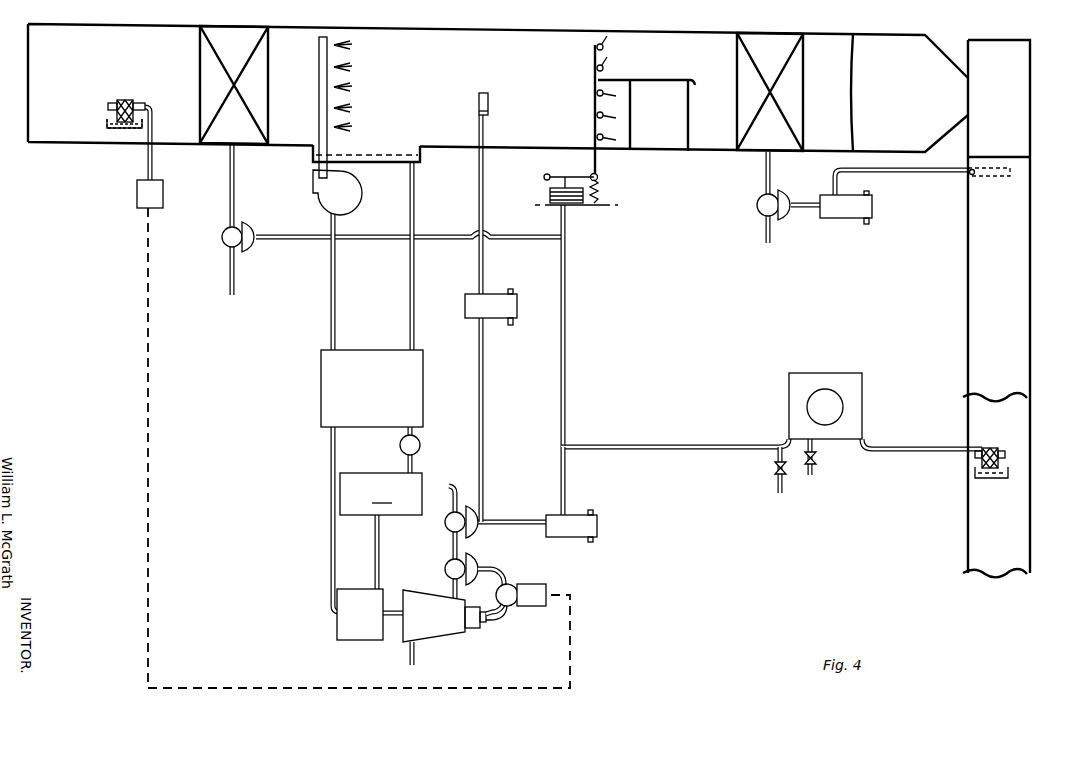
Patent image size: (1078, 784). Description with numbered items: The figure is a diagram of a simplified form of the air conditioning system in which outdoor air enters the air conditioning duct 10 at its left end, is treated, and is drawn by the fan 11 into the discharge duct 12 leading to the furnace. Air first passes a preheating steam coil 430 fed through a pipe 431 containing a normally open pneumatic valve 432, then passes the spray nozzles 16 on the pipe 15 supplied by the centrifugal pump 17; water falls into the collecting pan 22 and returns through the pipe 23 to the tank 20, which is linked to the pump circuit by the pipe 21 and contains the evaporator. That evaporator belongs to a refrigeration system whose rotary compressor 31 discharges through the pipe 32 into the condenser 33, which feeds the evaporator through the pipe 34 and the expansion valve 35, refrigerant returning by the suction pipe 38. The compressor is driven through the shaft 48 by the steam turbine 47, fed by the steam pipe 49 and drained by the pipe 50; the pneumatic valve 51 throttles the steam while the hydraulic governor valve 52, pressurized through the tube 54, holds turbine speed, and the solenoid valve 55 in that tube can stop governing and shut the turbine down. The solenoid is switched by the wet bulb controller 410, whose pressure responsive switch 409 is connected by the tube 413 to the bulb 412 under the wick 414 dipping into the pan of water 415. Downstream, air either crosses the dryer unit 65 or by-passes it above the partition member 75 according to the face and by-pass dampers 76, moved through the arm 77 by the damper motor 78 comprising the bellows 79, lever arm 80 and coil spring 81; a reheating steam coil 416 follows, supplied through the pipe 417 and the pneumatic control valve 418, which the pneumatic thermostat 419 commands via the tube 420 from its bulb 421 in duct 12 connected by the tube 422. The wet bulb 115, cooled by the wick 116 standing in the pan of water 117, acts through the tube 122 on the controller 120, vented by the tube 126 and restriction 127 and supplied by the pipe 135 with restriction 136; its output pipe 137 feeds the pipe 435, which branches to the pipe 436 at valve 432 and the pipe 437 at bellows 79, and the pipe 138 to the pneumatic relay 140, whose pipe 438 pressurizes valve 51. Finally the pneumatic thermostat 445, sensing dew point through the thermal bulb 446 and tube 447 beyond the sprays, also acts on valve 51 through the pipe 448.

The air conditioning duct 10 is at (539, 31).
The fan 11 is at (1025, 83).
The discharge duct 12 is at (1028, 278).
The spray pipe 15 is at (319, 82).
The spray nozzles 16 is at (362, 76).
The centrifugal pump 17 is at (355, 176).
The tank 20 is at (322, 404).
The pipe 21 is at (330, 307).
The collecting pan 22 is at (421, 158).
The pipe 23 is at (414, 296).
The rotary compressor 31 is at (358, 638).
The pipe 32 is at (379, 553).
The condenser 33 is at (381, 494).
The pipe 34 is at (416, 452).
The expansion valve 35 is at (400, 447).
The pipe 38 is at (330, 522).
The steam turbine 47 is at (444, 616).
The shaft 48 is at (392, 626).
The steam pipe 49 is at (453, 492).
The condensate pipe 50 is at (418, 655).
The pneumatic valve 51 is at (446, 526).
The hydraulic governor valve 52 is at (475, 560).
The tube 54 is at (500, 614).
The solenoid valve 55 is at (532, 584).
The dryer unit 65 is at (664, 74).
The partition member 75 is at (690, 81).
The face and by-pass dampers 76 is at (570, 103).
The arm 77 is at (596, 163).
The damper motor 78 is at (553, 208).
The bellows 79 is at (550, 192).
The lever arm 80 is at (566, 170).
The coil spring 81 is at (598, 192).
The wet bulb 115 is at (1000, 446).
The wick 116 is at (1006, 457).
The pan of water 117 is at (984, 478).
The controller 120 is at (870, 396).
The tube 122 is at (885, 460).
The tube 126 is at (811, 478).
The restriction 127 is at (816, 460).
The supply pipe 135 is at (776, 486).
The restriction 136 is at (774, 468).
The pipe 137 is at (664, 447).
The pipe 138 is at (567, 463).
The pneumatic relay 140 is at (604, 526).
The pressure responsive switch 409 is at (164, 202).
The wet bulb controller 410 is at (107, 80).
The bulb 412 is at (143, 104).
The tube 413 is at (152, 160).
The wick 414 is at (110, 107).
The pan of water 415 is at (107, 126).
The steam coil 416 is at (800, 92).
The steam pipe 417 is at (760, 246).
The pneumatic control valve 418 is at (788, 192).
The pneumatic thermostat 419 is at (884, 205).
The tube 420 is at (809, 210).
The bulb 421 is at (994, 186).
The tube 422 is at (908, 172).
The preheating steam coil 430 is at (268, 103).
The steam pipe 431 is at (236, 185).
The pneumatic valve 432 is at (252, 248).
The pipe 435 is at (567, 350).
The pipe 436 is at (430, 239).
The pipe 437 is at (567, 228).
The pipe 438 is at (510, 518).
The pneumatic thermostat 445 is at (528, 309).
The thermal bulb 446 is at (489, 103).
The tube 447 is at (484, 208).
The pipe 448 is at (484, 407).